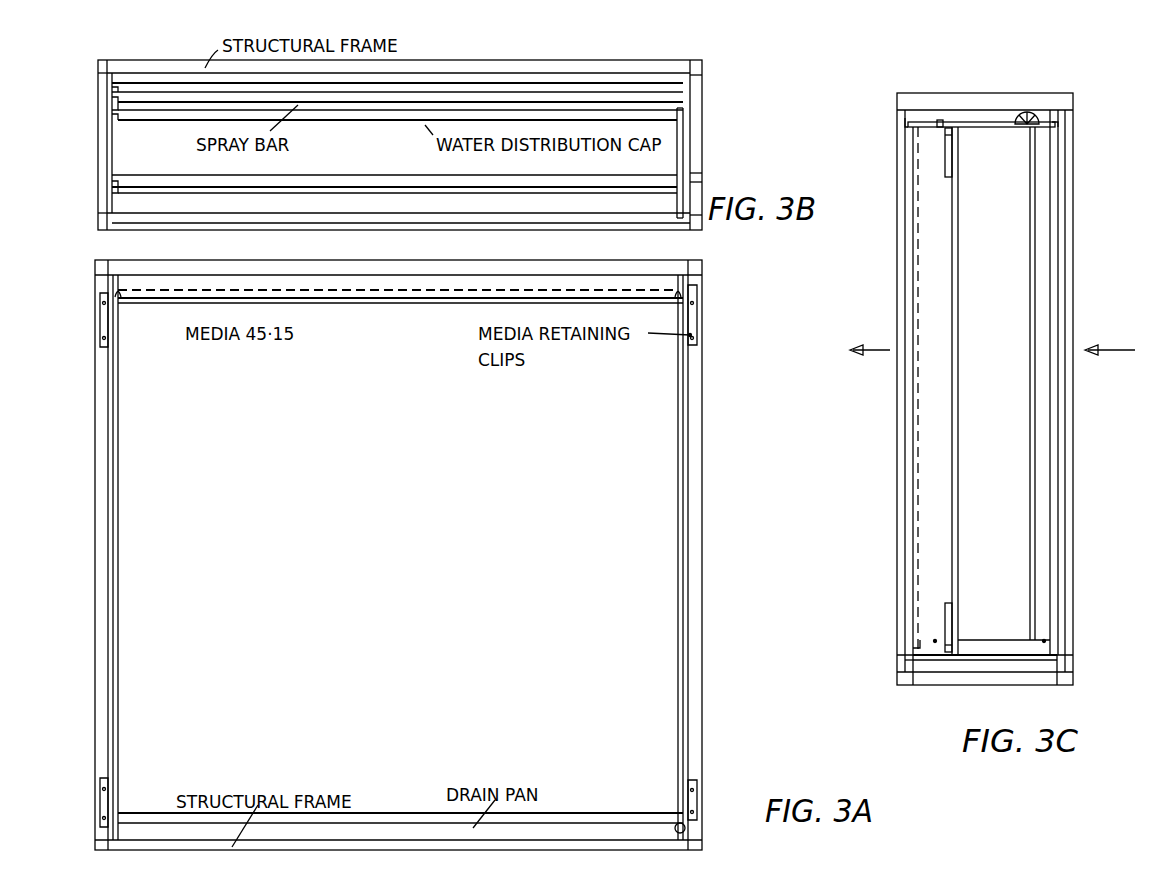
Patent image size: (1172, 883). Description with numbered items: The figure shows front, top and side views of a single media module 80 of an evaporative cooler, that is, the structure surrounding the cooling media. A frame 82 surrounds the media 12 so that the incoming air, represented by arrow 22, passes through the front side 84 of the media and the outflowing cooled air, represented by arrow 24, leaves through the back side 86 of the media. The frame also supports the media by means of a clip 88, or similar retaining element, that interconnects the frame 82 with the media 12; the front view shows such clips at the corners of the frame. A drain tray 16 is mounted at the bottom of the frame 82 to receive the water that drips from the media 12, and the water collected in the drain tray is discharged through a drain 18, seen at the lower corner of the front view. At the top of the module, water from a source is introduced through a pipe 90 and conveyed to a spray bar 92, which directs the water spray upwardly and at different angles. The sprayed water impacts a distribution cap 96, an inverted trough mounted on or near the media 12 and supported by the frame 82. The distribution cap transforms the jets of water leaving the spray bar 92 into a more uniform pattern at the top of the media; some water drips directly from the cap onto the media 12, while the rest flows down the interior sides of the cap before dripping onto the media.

In FIG. 3A, the media 12 is at (640, 433).
In FIG. 3A, the drain tray 16 is at (585, 828).
In FIG. 3C, the drain tray 16 is at (1035, 650).
In FIG. 3A, the drain 18 is at (686, 826).
In FIG. 3C, the arrow 22 is at (1115, 350).
In FIG. 3C, the arrow 24 is at (882, 350).
In FIG. 3A, the media module 80 is at (752, 587).
In FIG. 3B, the frame 82 is at (95, 148).
In FIG. 3A, the frame 82 is at (703, 485).
In FIG. 3C, the frame 82 is at (1075, 530).
In FIG. 3B, the front side 84 is at (470, 80).
In FIG. 3C, the front side 84 is at (1052, 220).
In FIG. 3B, the back side 86 is at (570, 190).
In FIG. 3C, the back side 86 is at (918, 275).
In FIG. 3A, the clip 88 is at (103, 318).
In FIG. 3C, the clip 88 is at (948, 155).
In FIG. 3B, the pipe 90 is at (678, 202).
In FIG. 3C, the pipe 90 is at (925, 122).
In FIG. 3B, the spray bar 92 is at (547, 105).
In FIG. 3C, the spray bar 92 is at (1027, 118).
In FIG. 3B, the distribution cap 96 is at (360, 126).
In FIG. 3C, the distribution cap 96 is at (1040, 125).